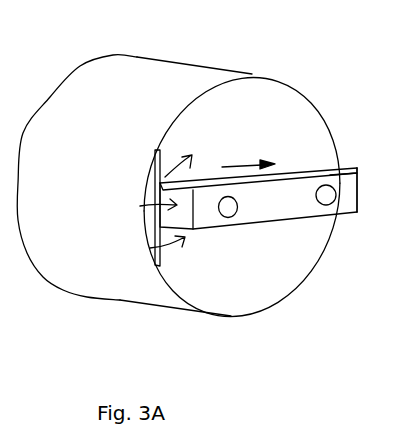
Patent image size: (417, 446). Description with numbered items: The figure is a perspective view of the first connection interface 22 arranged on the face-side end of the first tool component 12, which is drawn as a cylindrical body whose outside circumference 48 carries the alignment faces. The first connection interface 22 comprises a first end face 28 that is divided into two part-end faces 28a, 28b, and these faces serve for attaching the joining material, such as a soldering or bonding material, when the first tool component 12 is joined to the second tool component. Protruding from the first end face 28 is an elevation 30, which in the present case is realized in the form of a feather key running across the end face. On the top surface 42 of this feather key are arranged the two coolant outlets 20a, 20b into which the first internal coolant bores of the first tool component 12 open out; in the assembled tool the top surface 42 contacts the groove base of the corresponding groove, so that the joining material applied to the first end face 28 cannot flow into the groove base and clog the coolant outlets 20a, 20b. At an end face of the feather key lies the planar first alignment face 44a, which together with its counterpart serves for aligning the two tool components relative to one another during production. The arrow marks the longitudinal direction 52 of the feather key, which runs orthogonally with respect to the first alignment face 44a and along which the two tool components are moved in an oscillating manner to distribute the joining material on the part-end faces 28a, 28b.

The first tool component 12 is at (150, 75).
The outside circumference 48 is at (127, 298).
The first connection interface 22 is at (267, 197).
The first part-end face 28a is at (272, 103).
The second part-end face 28b is at (248, 297).
The first end face 28 is at (165, 177).
The first alignment face 44a is at (140, 206).
The top surface 42 is at (287, 210).
The elevation 30 is at (352, 180).
The coolant outlet 20a is at (233, 216).
The coolant outlet 20b is at (331, 204).
The longitudinal direction 52 is at (243, 166).